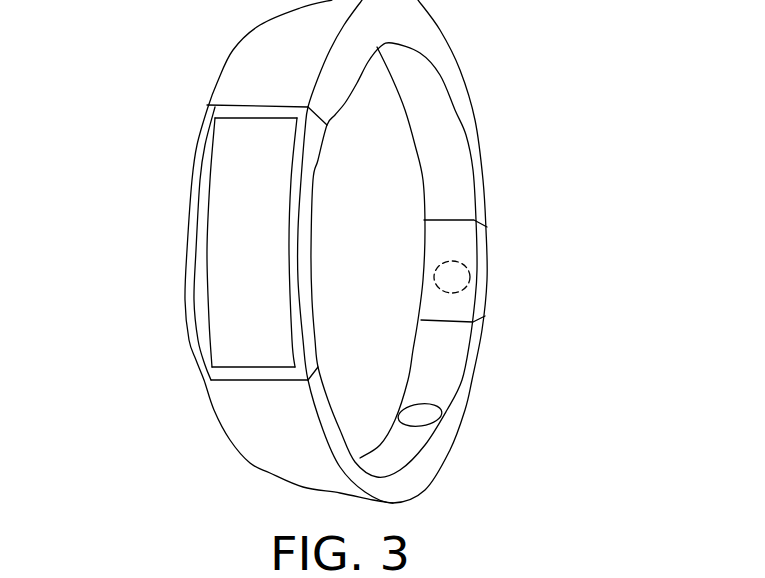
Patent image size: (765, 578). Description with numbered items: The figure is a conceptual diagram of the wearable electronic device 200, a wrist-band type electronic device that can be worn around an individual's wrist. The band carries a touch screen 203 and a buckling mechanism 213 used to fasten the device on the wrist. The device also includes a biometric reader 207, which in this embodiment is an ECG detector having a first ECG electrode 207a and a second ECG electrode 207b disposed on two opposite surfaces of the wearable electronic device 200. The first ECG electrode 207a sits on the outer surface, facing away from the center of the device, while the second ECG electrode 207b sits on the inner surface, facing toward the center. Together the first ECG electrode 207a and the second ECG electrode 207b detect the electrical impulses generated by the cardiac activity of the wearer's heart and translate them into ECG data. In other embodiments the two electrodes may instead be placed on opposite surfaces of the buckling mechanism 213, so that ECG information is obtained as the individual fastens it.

The wearable electronic device 200 is at (435, 42).
The touch screen 203 is at (208, 217).
The buckling mechanism 213 is at (468, 240).
The biometric reader 207 is at (522, 345).
The first ECG electrode 207a is at (455, 283).
The second ECG electrode 207b is at (437, 417).